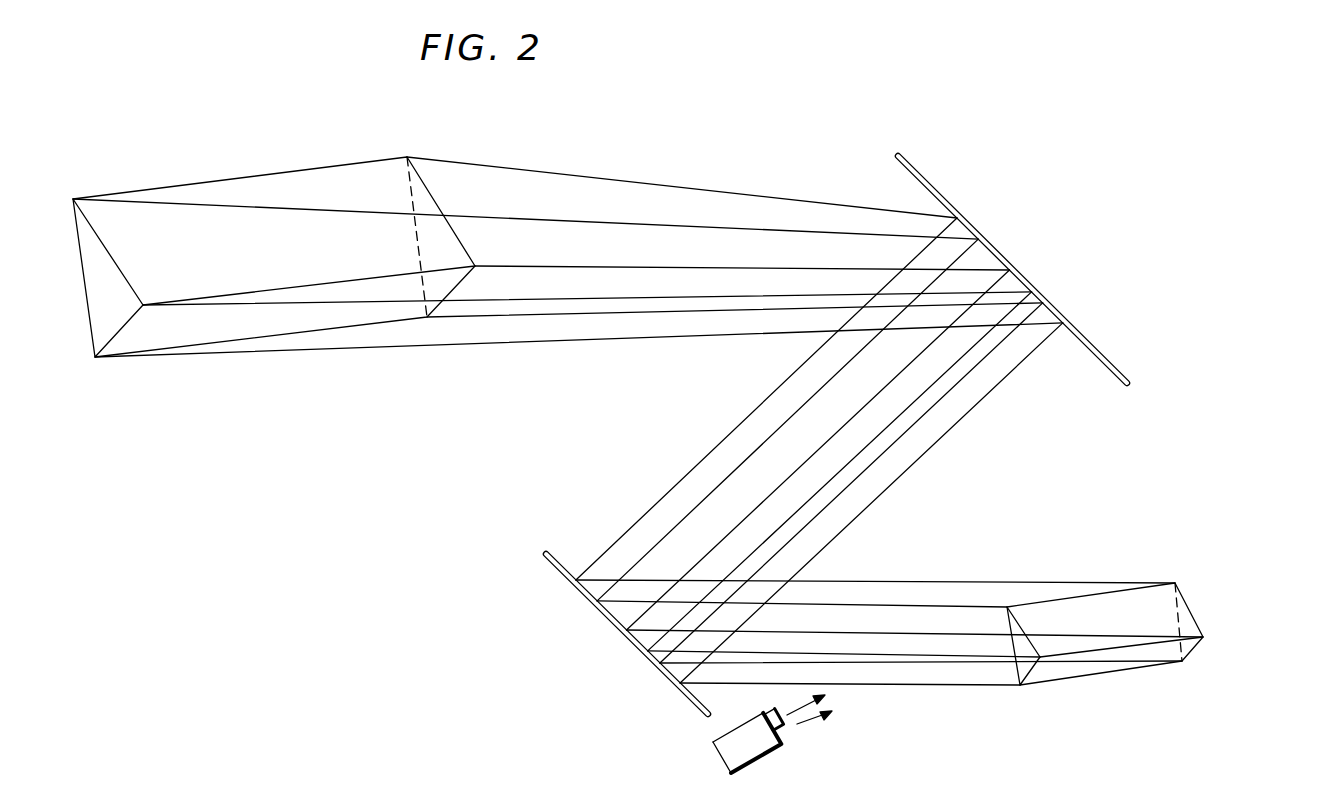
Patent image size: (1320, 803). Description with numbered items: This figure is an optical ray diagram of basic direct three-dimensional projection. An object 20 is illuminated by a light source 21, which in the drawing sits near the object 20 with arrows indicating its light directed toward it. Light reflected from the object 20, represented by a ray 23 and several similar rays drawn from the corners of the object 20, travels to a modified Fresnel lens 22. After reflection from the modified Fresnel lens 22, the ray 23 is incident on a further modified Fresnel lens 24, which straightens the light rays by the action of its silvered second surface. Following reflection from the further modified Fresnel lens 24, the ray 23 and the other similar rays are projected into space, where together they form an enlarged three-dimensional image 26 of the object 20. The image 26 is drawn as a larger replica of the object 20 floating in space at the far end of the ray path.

The object 20 is at (1187, 662).
The light source 21 is at (783, 745).
The modified Fresnel lens 22 is at (636, 647).
The ray 23 is at (626, 339).
The further modified Fresnel lens 24 is at (1101, 350).
The three-dimensional image 26 is at (287, 172).